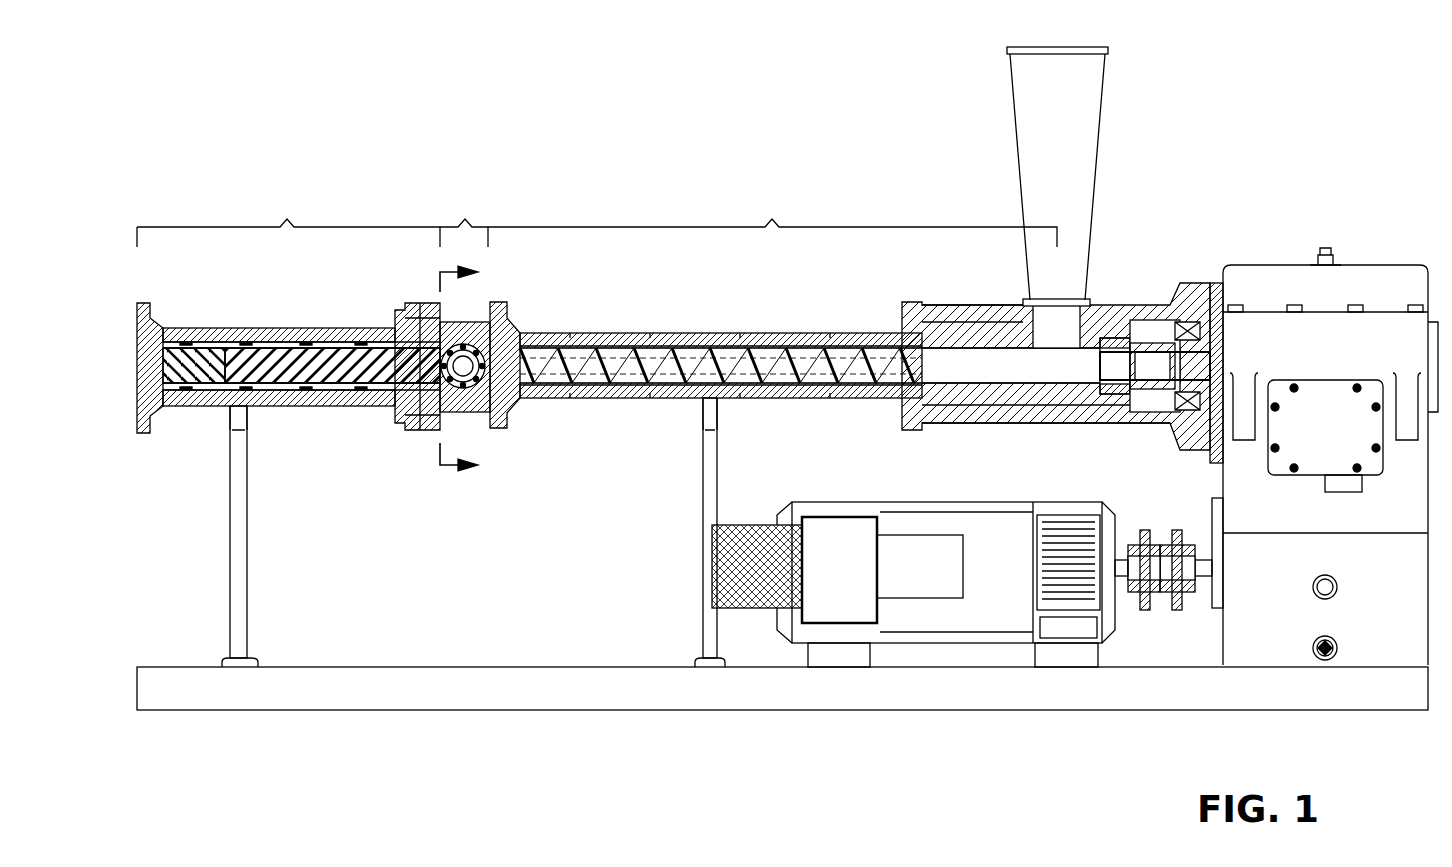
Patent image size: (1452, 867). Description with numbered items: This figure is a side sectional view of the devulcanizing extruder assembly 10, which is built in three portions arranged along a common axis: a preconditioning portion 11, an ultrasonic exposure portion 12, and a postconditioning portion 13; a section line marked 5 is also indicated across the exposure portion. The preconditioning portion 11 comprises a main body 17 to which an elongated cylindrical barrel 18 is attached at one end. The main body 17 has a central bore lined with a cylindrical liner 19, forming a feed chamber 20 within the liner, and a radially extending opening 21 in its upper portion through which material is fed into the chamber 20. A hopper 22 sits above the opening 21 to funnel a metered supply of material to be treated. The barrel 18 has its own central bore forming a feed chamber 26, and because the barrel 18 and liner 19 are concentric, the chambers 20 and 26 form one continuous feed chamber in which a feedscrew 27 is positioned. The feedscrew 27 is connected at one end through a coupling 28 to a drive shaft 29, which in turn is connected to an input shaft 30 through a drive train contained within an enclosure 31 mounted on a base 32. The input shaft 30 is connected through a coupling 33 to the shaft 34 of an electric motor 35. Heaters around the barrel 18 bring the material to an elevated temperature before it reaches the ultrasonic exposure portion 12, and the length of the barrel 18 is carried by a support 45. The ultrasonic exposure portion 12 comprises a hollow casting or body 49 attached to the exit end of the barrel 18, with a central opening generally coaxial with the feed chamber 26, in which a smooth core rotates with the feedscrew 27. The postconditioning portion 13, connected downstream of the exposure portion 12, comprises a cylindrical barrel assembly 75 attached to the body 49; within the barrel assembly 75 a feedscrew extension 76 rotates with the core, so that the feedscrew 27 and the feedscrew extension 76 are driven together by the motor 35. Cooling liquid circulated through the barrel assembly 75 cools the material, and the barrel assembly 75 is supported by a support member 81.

The devulcanizing extruder assembly 10 is at (960, 723).
The preconditioning portion 11 is at (794, 320).
The ultrasonic exposure portion 12 is at (480, 311).
The postconditioning portion 13 is at (288, 313).
The main body 17 is at (1065, 418).
The barrel 18 is at (830, 340).
The liner 19 is at (985, 335).
The feed chamber 20 is at (990, 395).
The opening 21 is at (1070, 330).
The hopper 22 is at (1073, 117).
The feed chamber 26 is at (745, 355).
The feedscrew 27 is at (790, 378).
The coupling 28 is at (1140, 335).
The drive shaft 29 is at (1198, 325).
The input shaft 30 is at (1202, 588).
The enclosure 31 is at (1390, 330).
The base 32 is at (1388, 688).
The coupling 33 is at (1162, 604).
The shaft 34 is at (1130, 558).
The electric motor 35 is at (993, 548).
The support 45 is at (718, 480).
The body 49 is at (470, 402).
The section line 5 is at (459, 375).
The barrel assembly 75 is at (332, 335).
The feedscrew extension 76 is at (305, 365).
The support member 81 is at (245, 577).